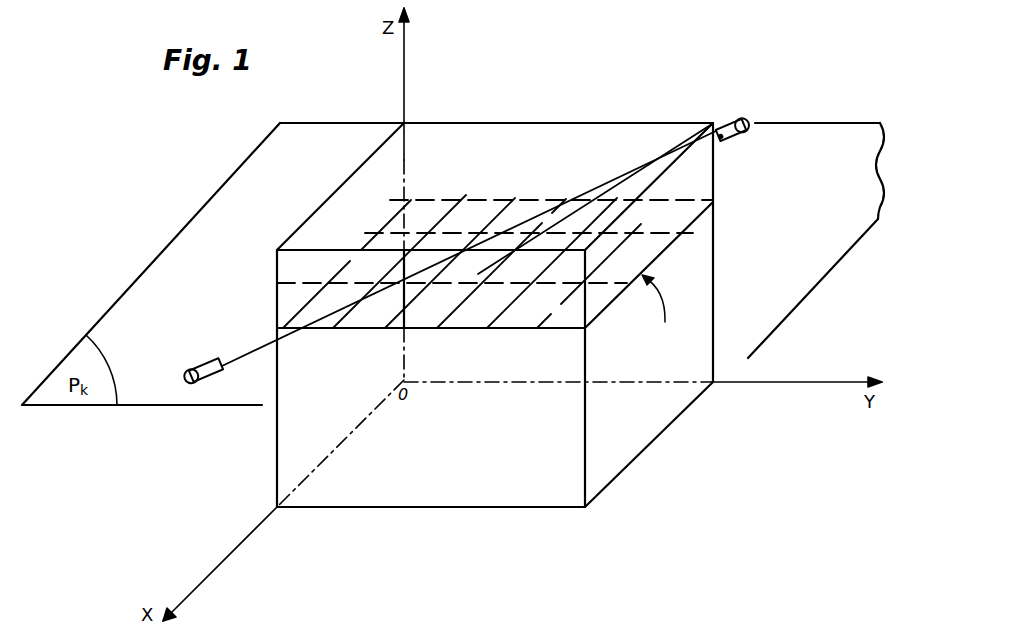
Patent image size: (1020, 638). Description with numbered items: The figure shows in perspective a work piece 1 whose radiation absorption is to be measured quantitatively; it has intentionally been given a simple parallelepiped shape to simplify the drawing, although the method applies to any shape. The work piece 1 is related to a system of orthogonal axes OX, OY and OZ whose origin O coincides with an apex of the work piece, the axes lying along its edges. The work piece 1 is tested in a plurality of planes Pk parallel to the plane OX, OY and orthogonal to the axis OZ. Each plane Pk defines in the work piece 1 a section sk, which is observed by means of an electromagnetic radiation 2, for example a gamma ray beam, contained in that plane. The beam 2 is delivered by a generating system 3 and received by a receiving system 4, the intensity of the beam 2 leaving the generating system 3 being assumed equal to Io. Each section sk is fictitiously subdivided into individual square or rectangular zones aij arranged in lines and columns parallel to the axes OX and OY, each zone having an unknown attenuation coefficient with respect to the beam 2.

The work piece 1 is at (512, 495).
The electromagnetic radiation 2 is at (246, 355).
The generating system 3 is at (197, 366).
The receiving system 4 is at (736, 118).